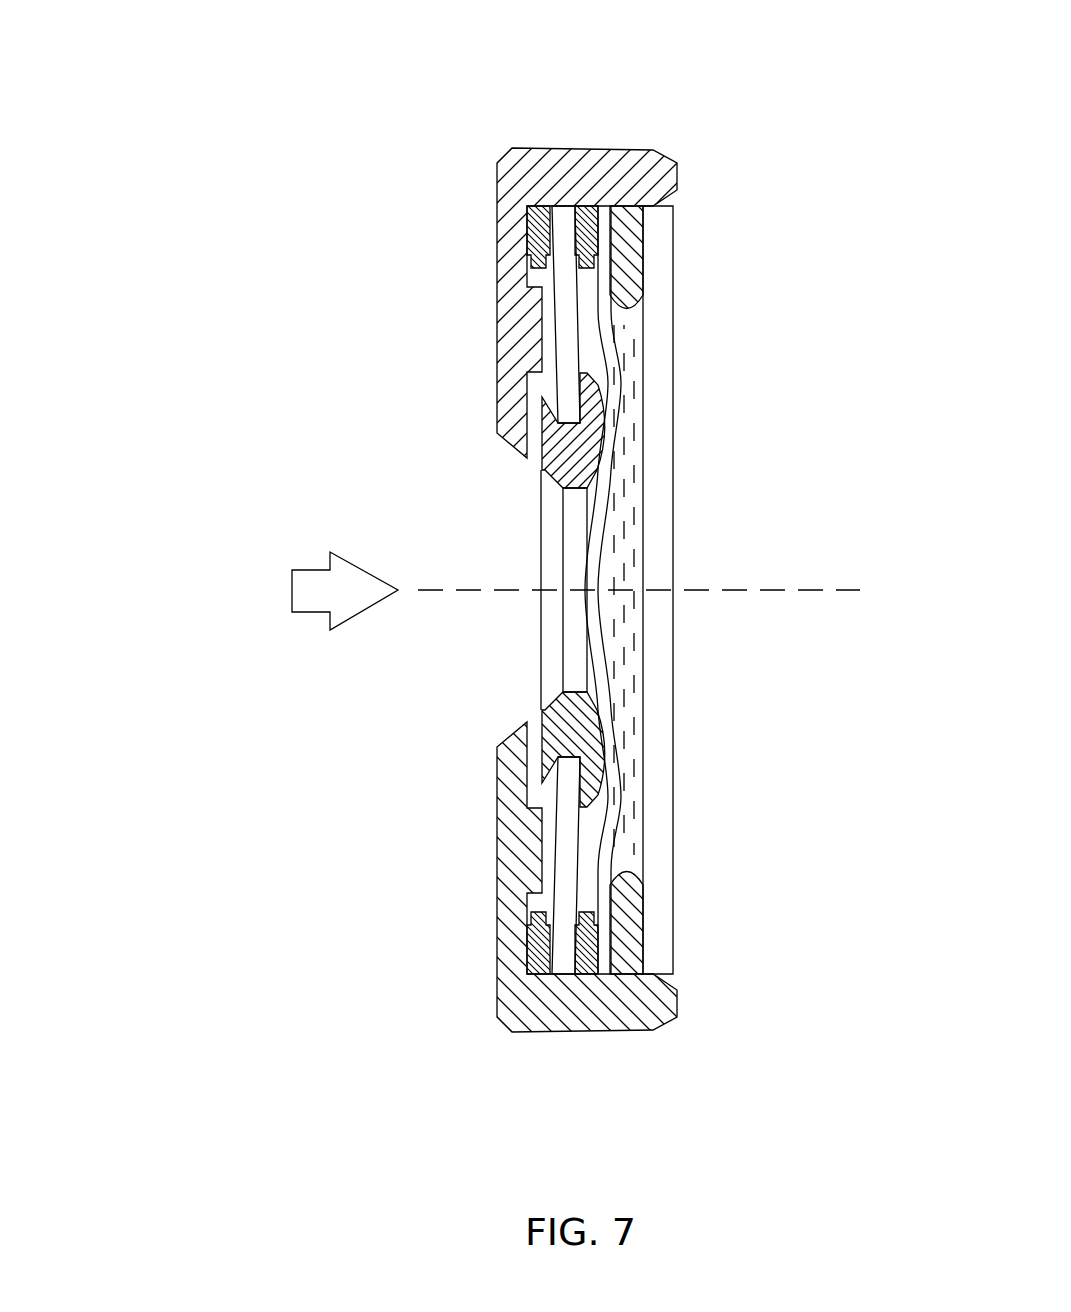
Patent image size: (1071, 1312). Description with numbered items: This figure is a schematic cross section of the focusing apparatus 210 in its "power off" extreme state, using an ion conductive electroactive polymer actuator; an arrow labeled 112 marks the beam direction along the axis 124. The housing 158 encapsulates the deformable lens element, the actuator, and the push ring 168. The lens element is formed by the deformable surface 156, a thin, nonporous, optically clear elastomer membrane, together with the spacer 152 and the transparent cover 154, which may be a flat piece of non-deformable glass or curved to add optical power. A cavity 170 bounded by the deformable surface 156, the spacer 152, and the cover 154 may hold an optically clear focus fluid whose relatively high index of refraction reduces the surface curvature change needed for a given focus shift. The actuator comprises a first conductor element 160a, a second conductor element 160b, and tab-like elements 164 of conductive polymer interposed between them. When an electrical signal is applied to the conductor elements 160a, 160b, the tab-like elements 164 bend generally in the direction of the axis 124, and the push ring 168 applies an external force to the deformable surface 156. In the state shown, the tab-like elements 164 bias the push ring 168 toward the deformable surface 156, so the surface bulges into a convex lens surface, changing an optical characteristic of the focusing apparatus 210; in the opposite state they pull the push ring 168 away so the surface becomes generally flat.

The beam 112 is at (313, 591).
The axis 124 is at (485, 588).
The spacer 152 is at (622, 963).
The transparent cover 154 is at (677, 498).
The deformable surface 156 is at (583, 605).
The housing 158 is at (596, 147).
The first conductor element 160a is at (598, 277).
The second conductor element 160b is at (548, 268).
The tab-like elements 164 is at (553, 325).
The push ring 168 is at (598, 424).
The cavity 170 is at (636, 630).
The focusing apparatus 210 is at (490, 76).